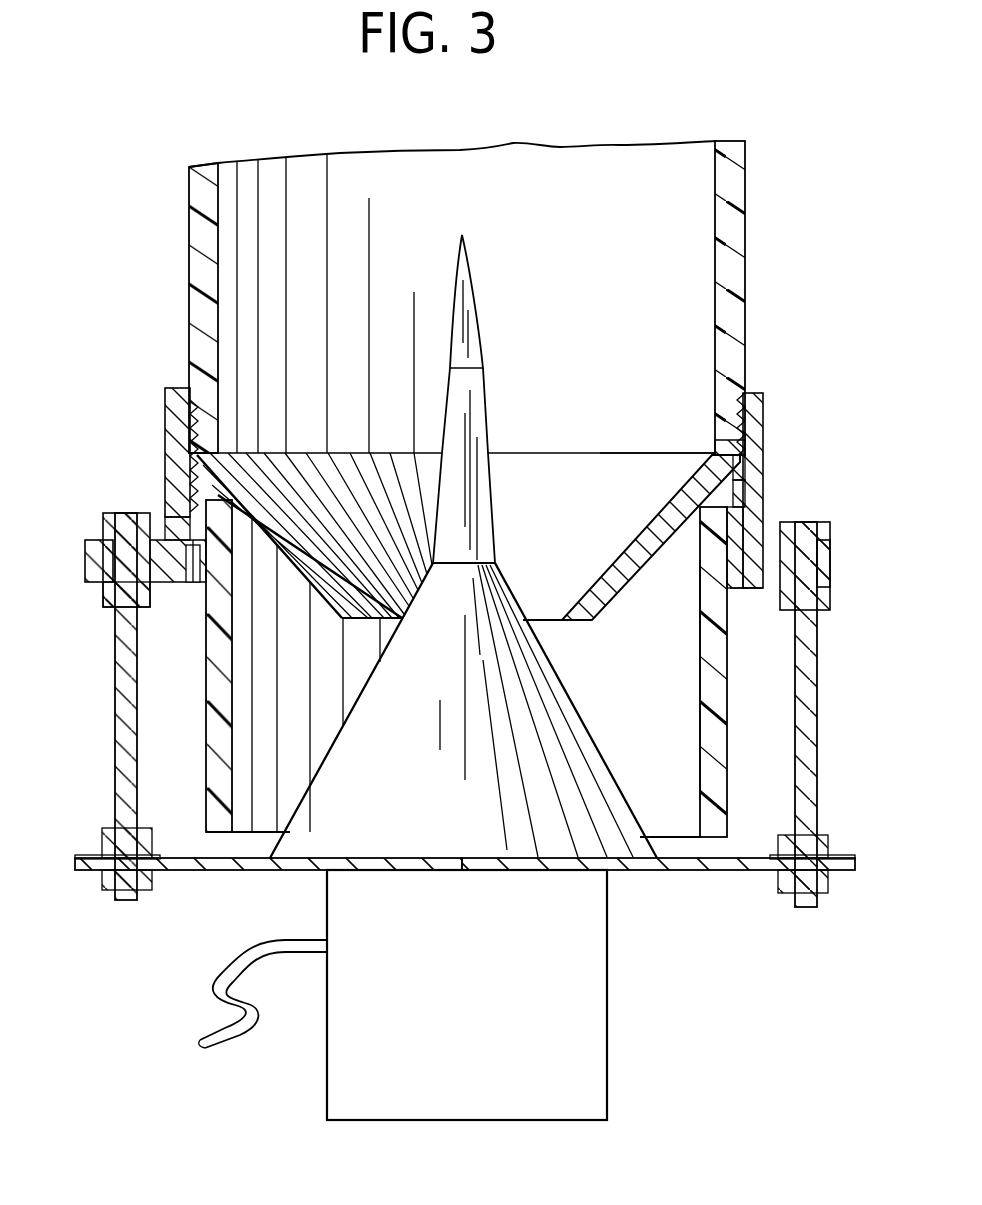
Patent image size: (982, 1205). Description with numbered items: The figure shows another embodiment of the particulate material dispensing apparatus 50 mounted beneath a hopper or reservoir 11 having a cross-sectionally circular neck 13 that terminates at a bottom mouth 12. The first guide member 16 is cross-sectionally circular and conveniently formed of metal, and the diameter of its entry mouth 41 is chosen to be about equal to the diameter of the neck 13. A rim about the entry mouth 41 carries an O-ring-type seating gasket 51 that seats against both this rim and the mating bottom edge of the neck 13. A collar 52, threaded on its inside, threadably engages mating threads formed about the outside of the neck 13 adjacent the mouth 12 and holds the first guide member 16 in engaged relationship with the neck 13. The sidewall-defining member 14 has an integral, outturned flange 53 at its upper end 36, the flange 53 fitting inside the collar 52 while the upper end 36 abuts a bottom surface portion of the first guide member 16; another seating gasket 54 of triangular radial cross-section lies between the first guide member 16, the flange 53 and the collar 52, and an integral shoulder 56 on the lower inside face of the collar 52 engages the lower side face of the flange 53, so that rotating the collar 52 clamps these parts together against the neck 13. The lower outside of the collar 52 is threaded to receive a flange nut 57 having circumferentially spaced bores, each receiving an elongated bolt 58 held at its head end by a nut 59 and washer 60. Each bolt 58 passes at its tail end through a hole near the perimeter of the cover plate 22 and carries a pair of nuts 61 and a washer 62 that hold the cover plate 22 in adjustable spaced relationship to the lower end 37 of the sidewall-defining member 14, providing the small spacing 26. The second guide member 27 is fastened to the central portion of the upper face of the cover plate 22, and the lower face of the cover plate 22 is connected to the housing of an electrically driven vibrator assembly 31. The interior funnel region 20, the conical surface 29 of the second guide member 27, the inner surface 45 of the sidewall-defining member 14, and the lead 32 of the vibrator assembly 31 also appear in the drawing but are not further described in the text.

The particulate material dispensing apparatus 50 is at (148, 256).
The hopper or reservoir 11 is at (690, 212).
The neck 13 is at (728, 265).
The bottom mouth 12 is at (504, 475).
The first guide member 16 is at (568, 483).
The entry mouth 41 is at (628, 452).
The seating gasket 51 is at (720, 450).
The collar 52 is at (762, 435).
The seating gasket 54 is at (740, 480).
The flange 53 is at (727, 520).
The funnel 20 is at (640, 545).
The upper end 36 is at (712, 522).
The washer 60 is at (108, 535).
The flange nut 57 is at (838, 566).
The nut 59 is at (100, 590).
The shoulder 56 is at (192, 580).
The bolt 58 is at (125, 700).
The second guide member 27 is at (440, 748).
The cone surface 29 is at (586, 705).
The sidewall-defining member 14 is at (700, 693).
The sleeve inner surface 45 is at (680, 740).
The lower end 37 is at (222, 842).
The nuts 61 is at (105, 835).
The washer 62 is at (98, 852).
The small spacing 26 is at (225, 868).
The cover plate 22 is at (690, 872).
The vibrator assembly 31 is at (467, 995).
The tube 32 is at (228, 958).